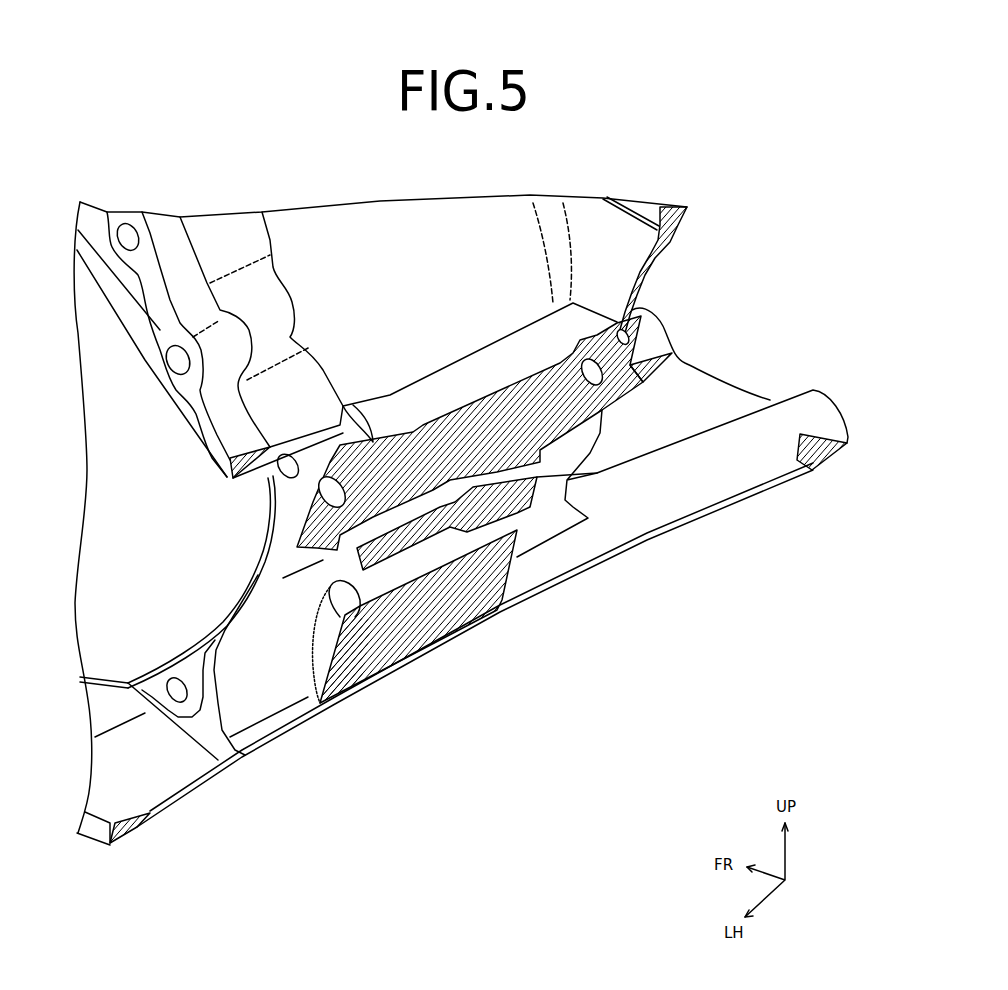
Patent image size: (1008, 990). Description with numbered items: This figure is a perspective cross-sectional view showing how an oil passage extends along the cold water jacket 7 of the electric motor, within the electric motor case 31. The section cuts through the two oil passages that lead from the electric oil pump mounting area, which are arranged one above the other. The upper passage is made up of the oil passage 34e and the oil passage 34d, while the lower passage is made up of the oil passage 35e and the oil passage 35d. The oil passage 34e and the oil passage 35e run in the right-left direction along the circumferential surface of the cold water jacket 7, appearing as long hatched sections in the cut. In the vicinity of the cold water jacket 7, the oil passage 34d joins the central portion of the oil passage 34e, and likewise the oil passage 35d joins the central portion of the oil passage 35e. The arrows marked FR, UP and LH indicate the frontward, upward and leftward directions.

The cold water jacket 7 is at (427, 297).
The electric motor case 31 is at (258, 683).
The oil passage 34d is at (463, 505).
The oil passage 34e is at (510, 477).
The oil passage 35d is at (443, 566).
The oil passage 35e is at (370, 600).